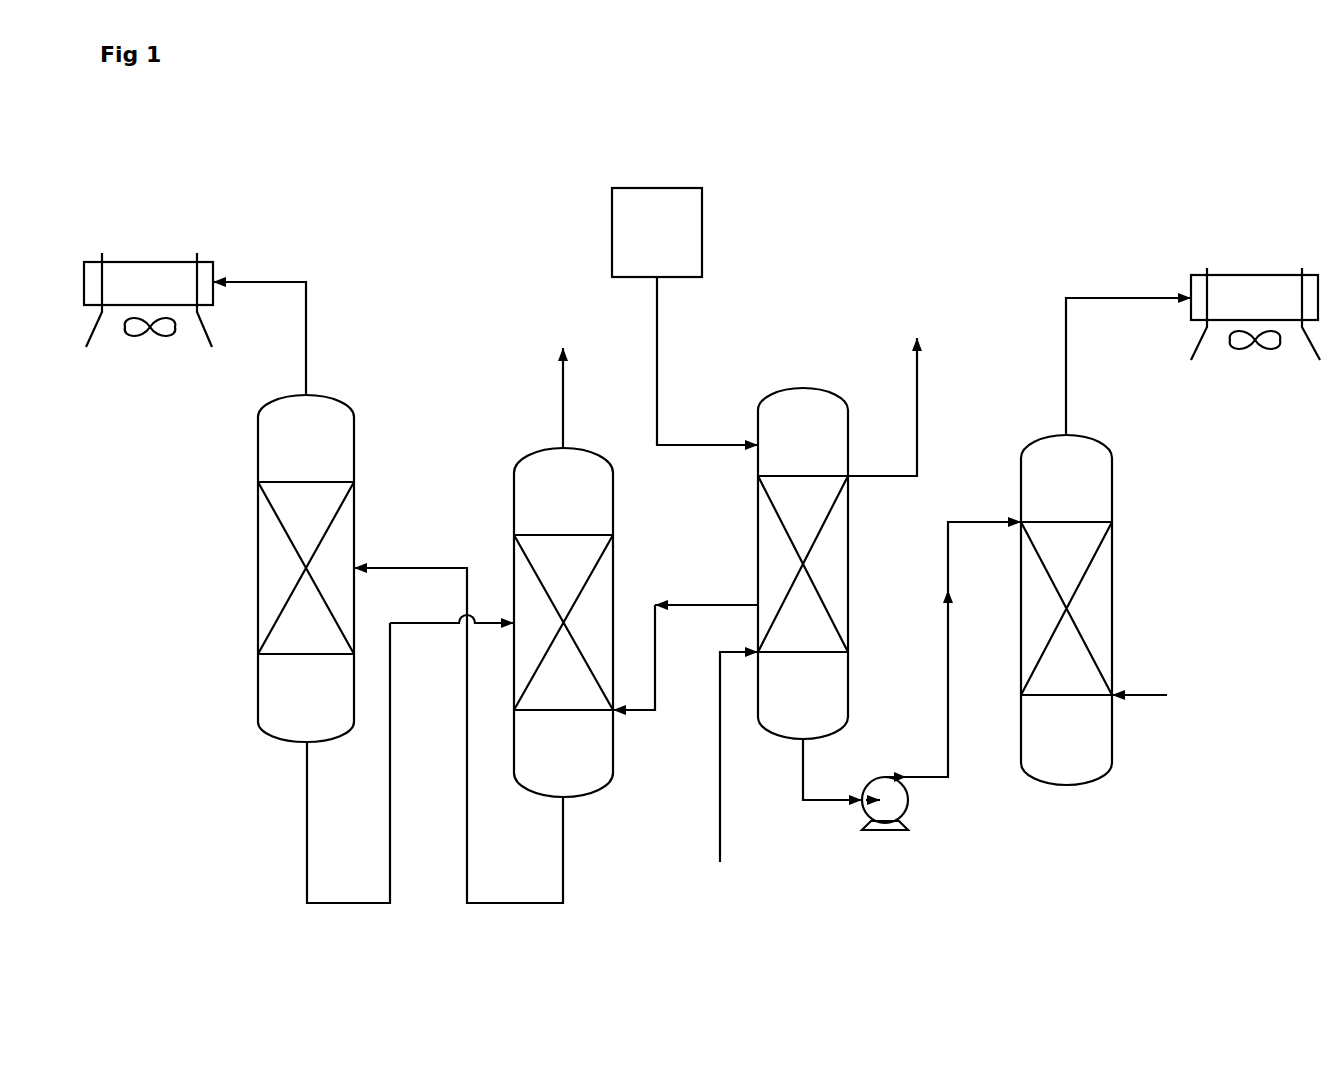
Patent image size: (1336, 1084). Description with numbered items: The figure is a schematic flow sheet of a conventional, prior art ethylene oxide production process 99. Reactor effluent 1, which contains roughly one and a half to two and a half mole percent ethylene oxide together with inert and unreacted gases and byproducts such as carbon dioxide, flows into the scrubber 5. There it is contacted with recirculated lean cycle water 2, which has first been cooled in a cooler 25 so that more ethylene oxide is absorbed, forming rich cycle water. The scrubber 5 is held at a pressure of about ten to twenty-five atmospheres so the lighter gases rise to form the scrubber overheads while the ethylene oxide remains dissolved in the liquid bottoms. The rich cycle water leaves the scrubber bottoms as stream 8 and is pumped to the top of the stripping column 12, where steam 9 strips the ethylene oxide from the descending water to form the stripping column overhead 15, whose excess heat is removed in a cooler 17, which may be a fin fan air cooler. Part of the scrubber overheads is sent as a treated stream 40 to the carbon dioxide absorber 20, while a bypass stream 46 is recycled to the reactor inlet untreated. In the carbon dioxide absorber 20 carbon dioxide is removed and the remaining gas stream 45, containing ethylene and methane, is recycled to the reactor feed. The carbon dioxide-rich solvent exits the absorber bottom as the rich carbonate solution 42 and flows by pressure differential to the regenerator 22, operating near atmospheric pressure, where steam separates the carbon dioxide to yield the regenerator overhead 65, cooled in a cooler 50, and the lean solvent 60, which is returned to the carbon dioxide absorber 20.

The ethylene oxide production process 99 is at (1047, 170).
The cooler 50 is at (148, 322).
The regenerator overhead stream 65 is at (281, 338).
The regenerator 22 is at (306, 568).
The remaining gas stream 45 is at (539, 398).
The carbon dioxide absorber 20 is at (563, 622).
The lean solvent 60 is at (327, 763).
The rich carbonate solution 42 is at (452, 792).
The cooler 25 is at (657, 232).
The lean cycle water 2 is at (707, 361).
The scrubber 5 is at (803, 563).
The treated stream 40 is at (685, 644).
The reactor effluent 1 is at (721, 757).
The stream 8 is at (912, 676).
The bypass stream 46 is at (911, 407).
The stripping column 12 is at (1066, 610).
The steam 9 is at (1154, 693).
The stripping column overhead 15 is at (1128, 366).
The cooler 17 is at (1255, 336).